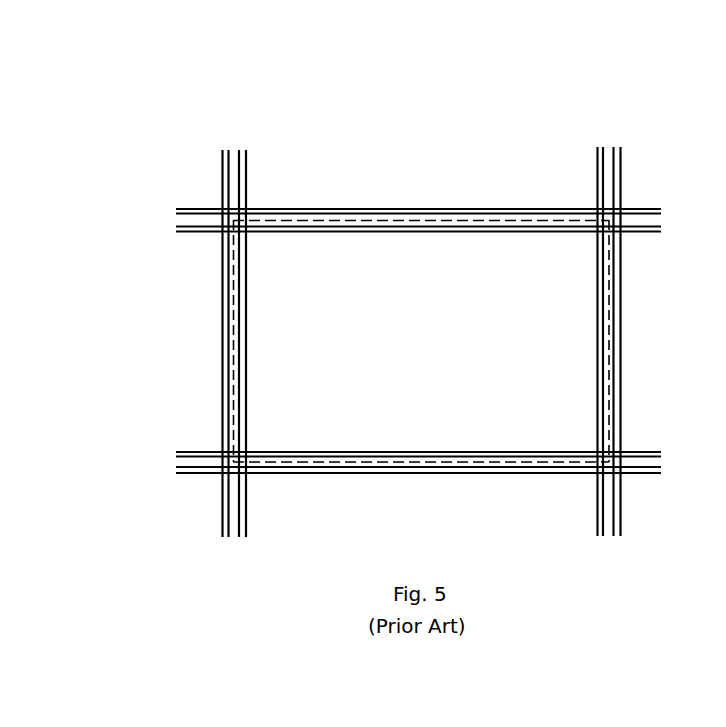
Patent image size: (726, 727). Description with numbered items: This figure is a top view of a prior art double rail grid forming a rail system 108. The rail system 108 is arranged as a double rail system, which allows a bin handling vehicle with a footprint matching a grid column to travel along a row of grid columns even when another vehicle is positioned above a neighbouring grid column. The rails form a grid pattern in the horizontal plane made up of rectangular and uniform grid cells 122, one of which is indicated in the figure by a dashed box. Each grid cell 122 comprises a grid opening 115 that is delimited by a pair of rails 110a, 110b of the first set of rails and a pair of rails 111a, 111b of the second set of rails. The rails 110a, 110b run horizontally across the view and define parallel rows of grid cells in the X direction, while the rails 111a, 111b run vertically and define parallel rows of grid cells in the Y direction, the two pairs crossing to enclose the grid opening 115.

The rail system 108 is at (235, 110).
The rail of the first set of rails 110a is at (438, 210).
The rail of the first set of rails 110b is at (200, 450).
The rail of the second set of rails 111a is at (248, 169).
The rail of the second set of rails 111b is at (622, 367).
The grid opening 115 is at (421, 342).
The grid cell 122 is at (382, 221).